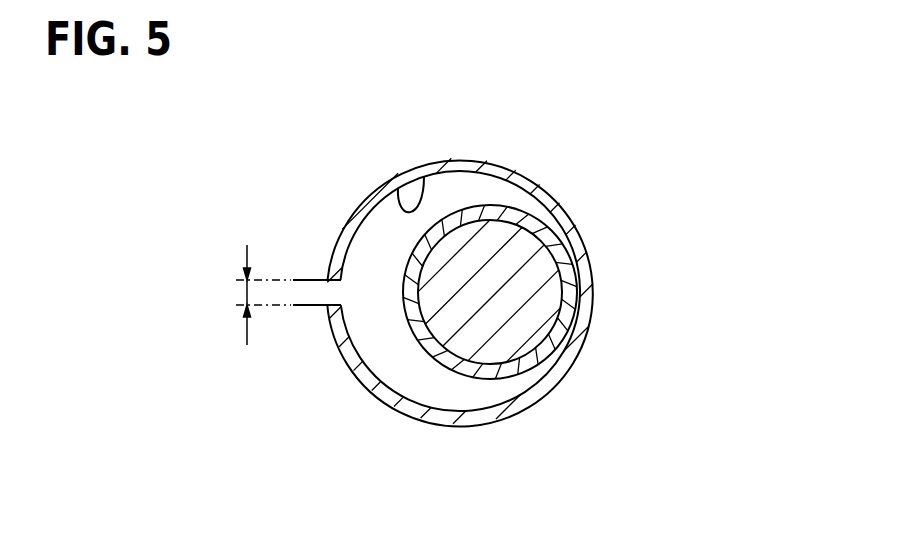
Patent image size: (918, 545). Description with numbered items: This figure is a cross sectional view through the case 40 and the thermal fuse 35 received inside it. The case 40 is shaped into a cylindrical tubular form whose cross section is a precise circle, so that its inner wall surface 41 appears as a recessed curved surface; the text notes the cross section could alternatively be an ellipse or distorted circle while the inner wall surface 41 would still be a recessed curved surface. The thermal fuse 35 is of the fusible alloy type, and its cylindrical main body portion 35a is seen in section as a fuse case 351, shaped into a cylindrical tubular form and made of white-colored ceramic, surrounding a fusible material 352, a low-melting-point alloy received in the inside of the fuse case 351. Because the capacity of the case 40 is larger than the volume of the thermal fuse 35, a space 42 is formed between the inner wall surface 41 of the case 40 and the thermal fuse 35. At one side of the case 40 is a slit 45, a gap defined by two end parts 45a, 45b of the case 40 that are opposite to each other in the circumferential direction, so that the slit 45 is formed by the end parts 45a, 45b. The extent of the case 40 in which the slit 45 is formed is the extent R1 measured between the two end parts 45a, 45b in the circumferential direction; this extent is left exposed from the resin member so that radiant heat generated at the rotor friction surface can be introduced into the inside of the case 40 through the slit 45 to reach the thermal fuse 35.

The case 40 is at (358, 208).
The inner wall surface 41 is at (418, 196).
The space 42 is at (383, 360).
The slit 45 is at (297, 308).
The end part 45a is at (313, 280).
The end part 45b is at (318, 308).
The extent R1 is at (247, 292).
The thermal fuse 35 is at (574, 331).
The main body portion 35a is at (574, 274).
The fuse case 351 is at (527, 214).
The fusible material 352 is at (512, 290).